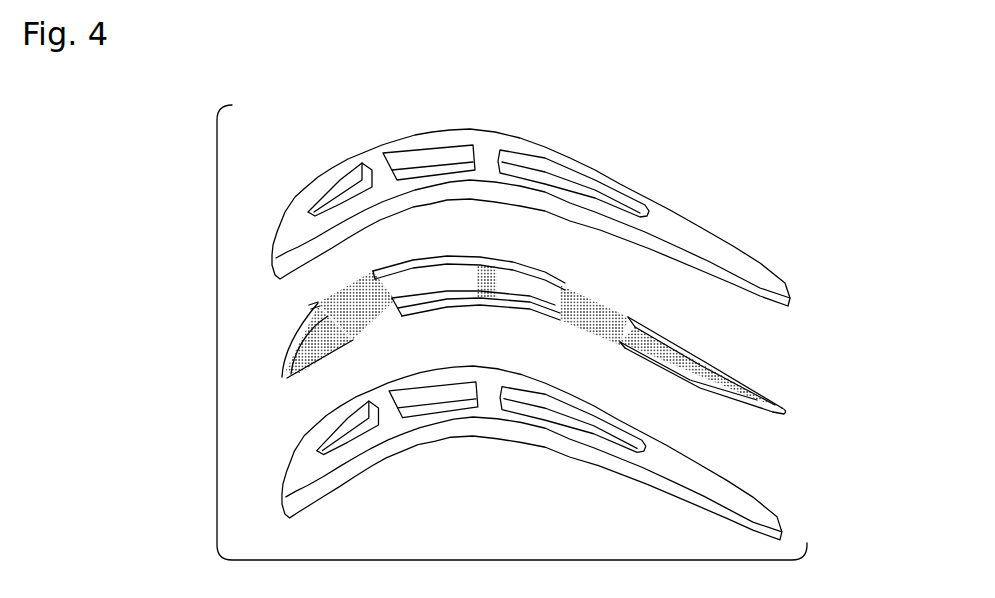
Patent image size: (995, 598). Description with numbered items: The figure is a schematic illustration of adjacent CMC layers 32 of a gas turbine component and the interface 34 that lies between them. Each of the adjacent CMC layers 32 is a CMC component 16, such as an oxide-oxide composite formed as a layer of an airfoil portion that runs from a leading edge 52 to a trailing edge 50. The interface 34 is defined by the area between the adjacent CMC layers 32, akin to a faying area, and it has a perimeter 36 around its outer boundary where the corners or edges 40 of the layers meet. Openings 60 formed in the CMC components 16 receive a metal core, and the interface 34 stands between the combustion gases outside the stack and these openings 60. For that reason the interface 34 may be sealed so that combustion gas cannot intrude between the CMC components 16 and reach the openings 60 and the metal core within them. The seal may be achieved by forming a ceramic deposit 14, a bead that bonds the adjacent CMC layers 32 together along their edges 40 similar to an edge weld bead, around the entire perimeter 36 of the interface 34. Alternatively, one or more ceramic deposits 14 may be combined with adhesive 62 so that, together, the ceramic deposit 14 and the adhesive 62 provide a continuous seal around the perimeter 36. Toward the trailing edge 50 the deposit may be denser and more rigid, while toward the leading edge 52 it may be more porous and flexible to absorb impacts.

The ceramic deposit 14 is at (477, 258).
The CMC component 16 is at (550, 337).
The adjacent CMC layers 32 is at (745, 237).
The interface 34 is at (652, 343).
The perimeter 36 is at (722, 372).
The corners or edges 40 is at (668, 257).
The trailing edge 50 is at (785, 413).
The leading edge 52 is at (280, 372).
The openings 60 is at (433, 153).
The adhesive 62 is at (378, 308).